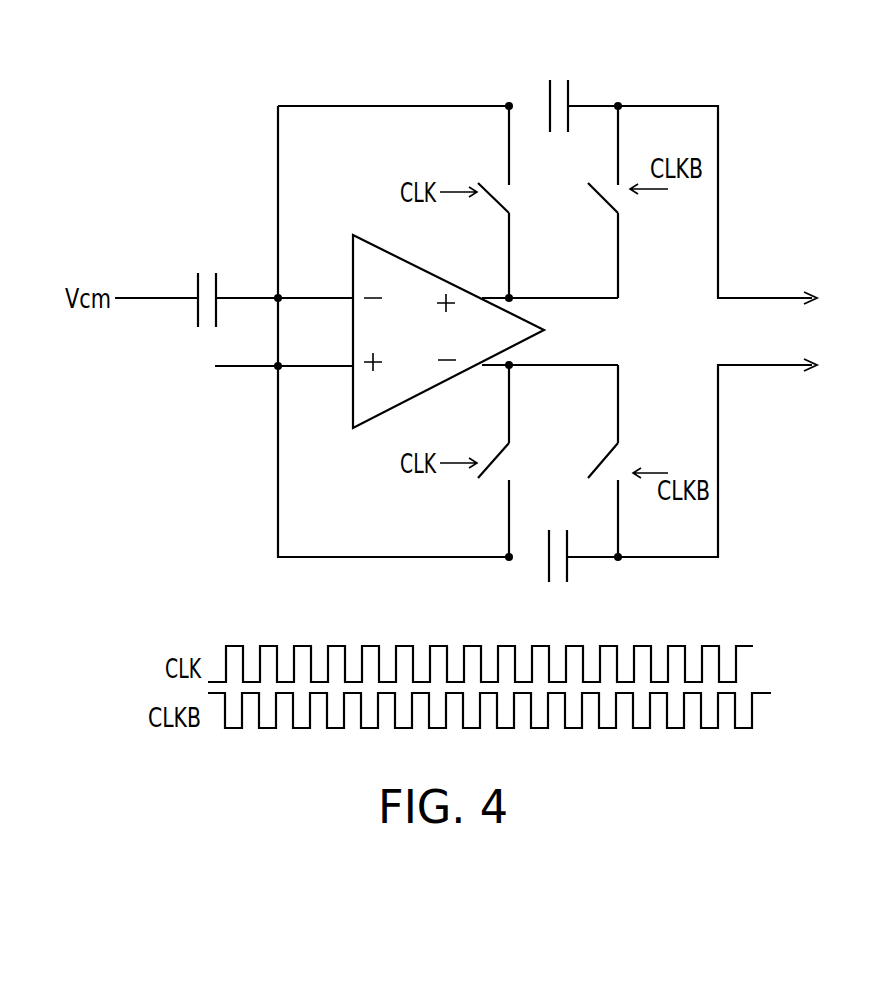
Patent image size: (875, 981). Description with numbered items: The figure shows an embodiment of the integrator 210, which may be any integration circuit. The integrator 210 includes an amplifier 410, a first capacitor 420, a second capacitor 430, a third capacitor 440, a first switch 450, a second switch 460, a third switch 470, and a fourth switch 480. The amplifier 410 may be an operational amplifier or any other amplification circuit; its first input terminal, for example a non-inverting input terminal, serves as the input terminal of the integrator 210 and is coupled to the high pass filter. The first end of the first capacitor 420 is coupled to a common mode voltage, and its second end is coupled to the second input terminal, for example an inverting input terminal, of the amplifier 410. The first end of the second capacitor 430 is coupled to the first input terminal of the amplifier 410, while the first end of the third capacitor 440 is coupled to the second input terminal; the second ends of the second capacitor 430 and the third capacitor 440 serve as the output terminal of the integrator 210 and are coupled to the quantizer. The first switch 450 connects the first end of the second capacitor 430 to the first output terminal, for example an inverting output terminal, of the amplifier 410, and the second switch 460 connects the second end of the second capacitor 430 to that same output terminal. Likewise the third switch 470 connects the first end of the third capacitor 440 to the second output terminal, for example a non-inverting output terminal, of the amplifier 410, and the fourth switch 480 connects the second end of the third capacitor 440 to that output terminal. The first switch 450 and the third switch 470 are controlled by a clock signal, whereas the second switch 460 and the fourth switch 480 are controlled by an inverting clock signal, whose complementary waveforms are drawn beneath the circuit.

The integrator 210 is at (806, 556).
The amplifier 410 is at (431, 270).
The first capacitor 420 is at (205, 270).
The second capacitor 430 is at (558, 578).
The third capacitor 440 is at (557, 84).
The first switch 450 is at (507, 467).
The second switch 460 is at (618, 467).
The third switch 470 is at (508, 196).
The fourth switch 480 is at (618, 196).